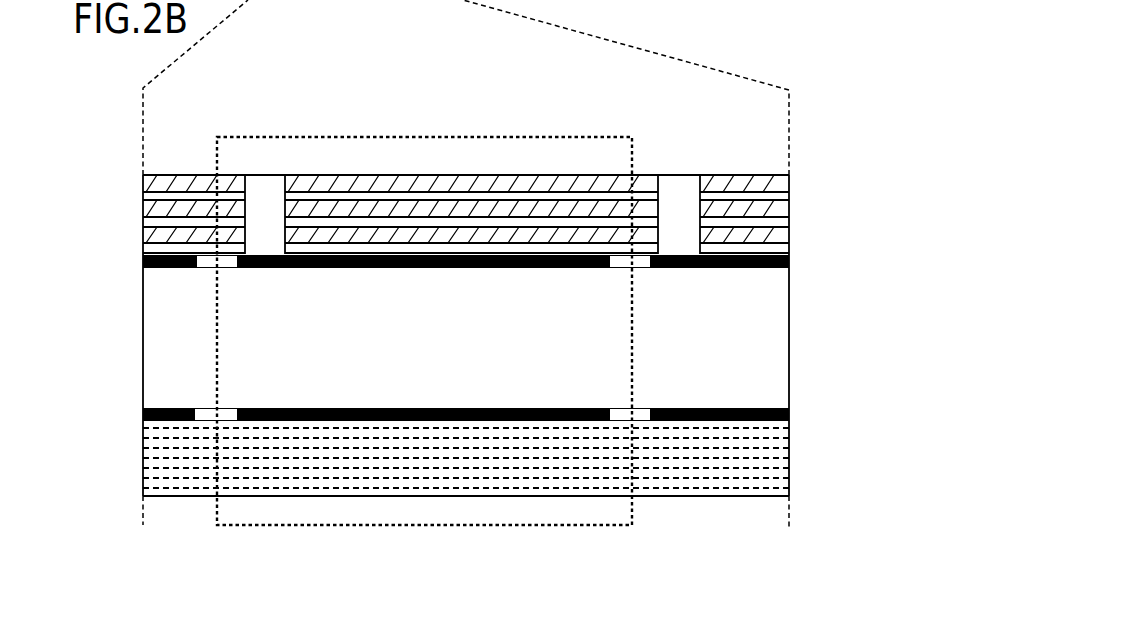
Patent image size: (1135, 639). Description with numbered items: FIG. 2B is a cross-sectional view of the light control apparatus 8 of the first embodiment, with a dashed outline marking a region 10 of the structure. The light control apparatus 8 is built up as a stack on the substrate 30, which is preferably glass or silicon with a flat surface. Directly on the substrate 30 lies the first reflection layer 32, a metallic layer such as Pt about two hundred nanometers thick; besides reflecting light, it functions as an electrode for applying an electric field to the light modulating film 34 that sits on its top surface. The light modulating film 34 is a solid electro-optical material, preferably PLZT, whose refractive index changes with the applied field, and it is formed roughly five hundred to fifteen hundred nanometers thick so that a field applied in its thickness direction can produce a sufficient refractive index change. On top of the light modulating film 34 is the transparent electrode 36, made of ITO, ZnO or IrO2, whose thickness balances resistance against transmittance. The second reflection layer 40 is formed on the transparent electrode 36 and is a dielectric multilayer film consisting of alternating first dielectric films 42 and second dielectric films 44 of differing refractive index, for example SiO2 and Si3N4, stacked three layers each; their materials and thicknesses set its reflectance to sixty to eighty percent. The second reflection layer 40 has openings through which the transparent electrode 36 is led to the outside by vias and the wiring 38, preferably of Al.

The light control apparatus 8 is at (473, 614).
The region 10 is at (422, 135).
The substrate 30 is at (778, 455).
The first reflection layer 32 is at (788, 415).
The light modulating film 34 is at (778, 338).
The transparent electrode 36 is at (788, 263).
The wiring 38 is at (680, 185).
The second reflection layer 40 is at (541, 154).
The first dielectric film 42 is at (882, 250).
The second dielectric film 44 is at (783, 178).